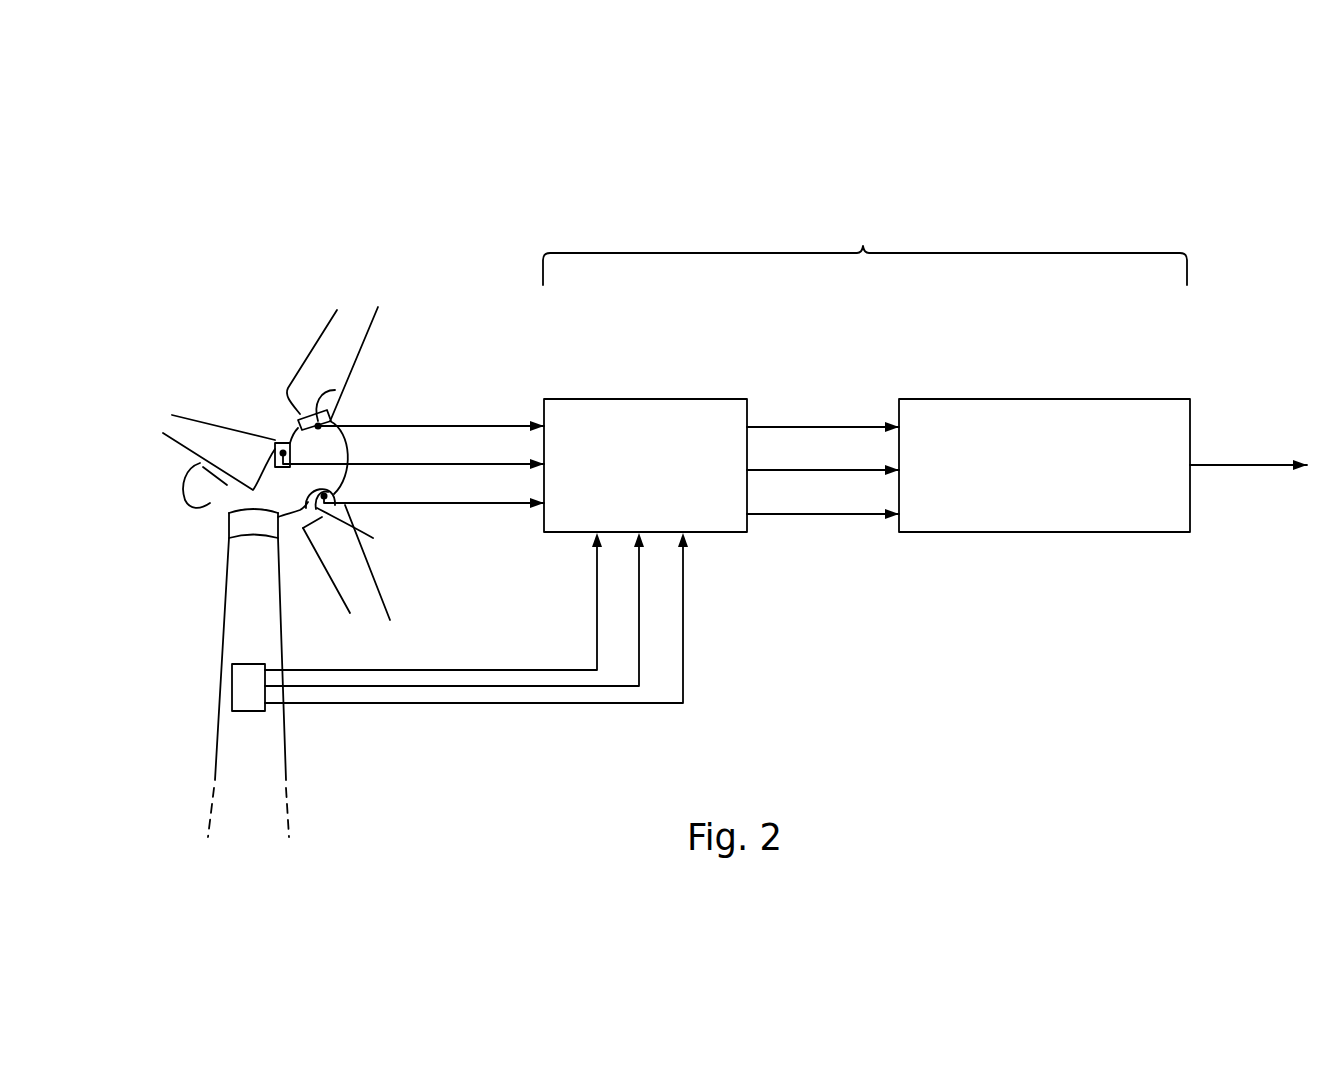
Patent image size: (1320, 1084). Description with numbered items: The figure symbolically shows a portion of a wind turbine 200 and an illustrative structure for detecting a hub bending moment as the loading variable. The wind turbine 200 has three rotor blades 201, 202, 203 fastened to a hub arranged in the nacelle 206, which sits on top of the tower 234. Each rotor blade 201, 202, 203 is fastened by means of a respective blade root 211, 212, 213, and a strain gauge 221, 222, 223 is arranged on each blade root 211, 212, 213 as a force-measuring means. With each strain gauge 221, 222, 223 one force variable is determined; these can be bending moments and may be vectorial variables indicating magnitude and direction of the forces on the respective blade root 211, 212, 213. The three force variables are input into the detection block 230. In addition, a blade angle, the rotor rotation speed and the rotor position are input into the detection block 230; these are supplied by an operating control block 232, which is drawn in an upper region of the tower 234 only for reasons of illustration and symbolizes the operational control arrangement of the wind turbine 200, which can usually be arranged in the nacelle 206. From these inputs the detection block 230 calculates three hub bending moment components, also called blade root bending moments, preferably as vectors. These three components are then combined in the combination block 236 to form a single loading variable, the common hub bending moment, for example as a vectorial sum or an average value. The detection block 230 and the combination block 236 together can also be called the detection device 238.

The wind turbine 200 is at (246, 266).
The rotor blade 201 is at (358, 337).
The rotor blade 202 is at (210, 437).
The rotor blade 203 is at (373, 592).
The nacelle 206 is at (195, 517).
The blade root 211 is at (302, 413).
The blade root 212 is at (277, 440).
The blade root 213 is at (310, 503).
The strain gauge 221 is at (327, 402).
The strain gauge 222 is at (207, 462).
The strain gauge 223 is at (323, 517).
The detection block 230 is at (638, 412).
The operating control block 232 is at (258, 712).
The tower 234 is at (231, 755).
The combination block 236 is at (1066, 412).
The detection device 238 is at (865, 249).